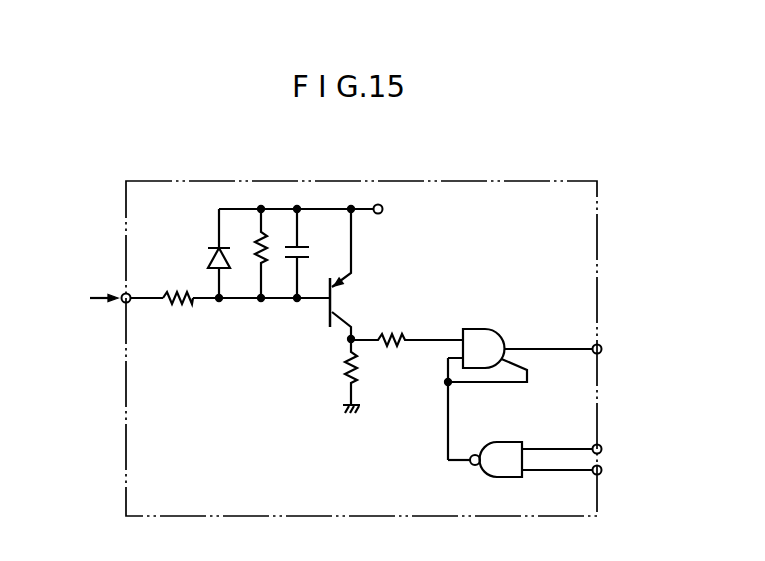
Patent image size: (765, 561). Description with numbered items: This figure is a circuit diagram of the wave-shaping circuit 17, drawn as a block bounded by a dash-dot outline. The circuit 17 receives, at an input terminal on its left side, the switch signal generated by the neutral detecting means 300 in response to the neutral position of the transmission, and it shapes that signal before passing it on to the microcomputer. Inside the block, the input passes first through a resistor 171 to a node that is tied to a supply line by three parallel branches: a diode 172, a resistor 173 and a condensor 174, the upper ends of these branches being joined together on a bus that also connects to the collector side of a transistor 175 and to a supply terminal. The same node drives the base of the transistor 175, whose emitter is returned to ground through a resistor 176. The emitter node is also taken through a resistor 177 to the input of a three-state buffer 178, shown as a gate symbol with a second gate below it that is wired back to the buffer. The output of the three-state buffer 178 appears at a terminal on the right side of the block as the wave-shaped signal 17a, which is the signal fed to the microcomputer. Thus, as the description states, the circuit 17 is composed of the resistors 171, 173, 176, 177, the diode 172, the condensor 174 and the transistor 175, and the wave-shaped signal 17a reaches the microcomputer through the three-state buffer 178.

The wave-shaping circuit 17 is at (548, 177).
The wave-shaped signal 17a is at (585, 347).
The resistor 171 is at (168, 305).
The diode 172 is at (208, 262).
The resistor 173 is at (266, 250).
The condensor 174 is at (306, 254).
The transistor 175 is at (337, 315).
The resistor 176 is at (359, 374).
The resistor 177 is at (405, 334).
The three-state buffer 178 is at (488, 330).
The neutral detecting means 300 is at (86, 300).